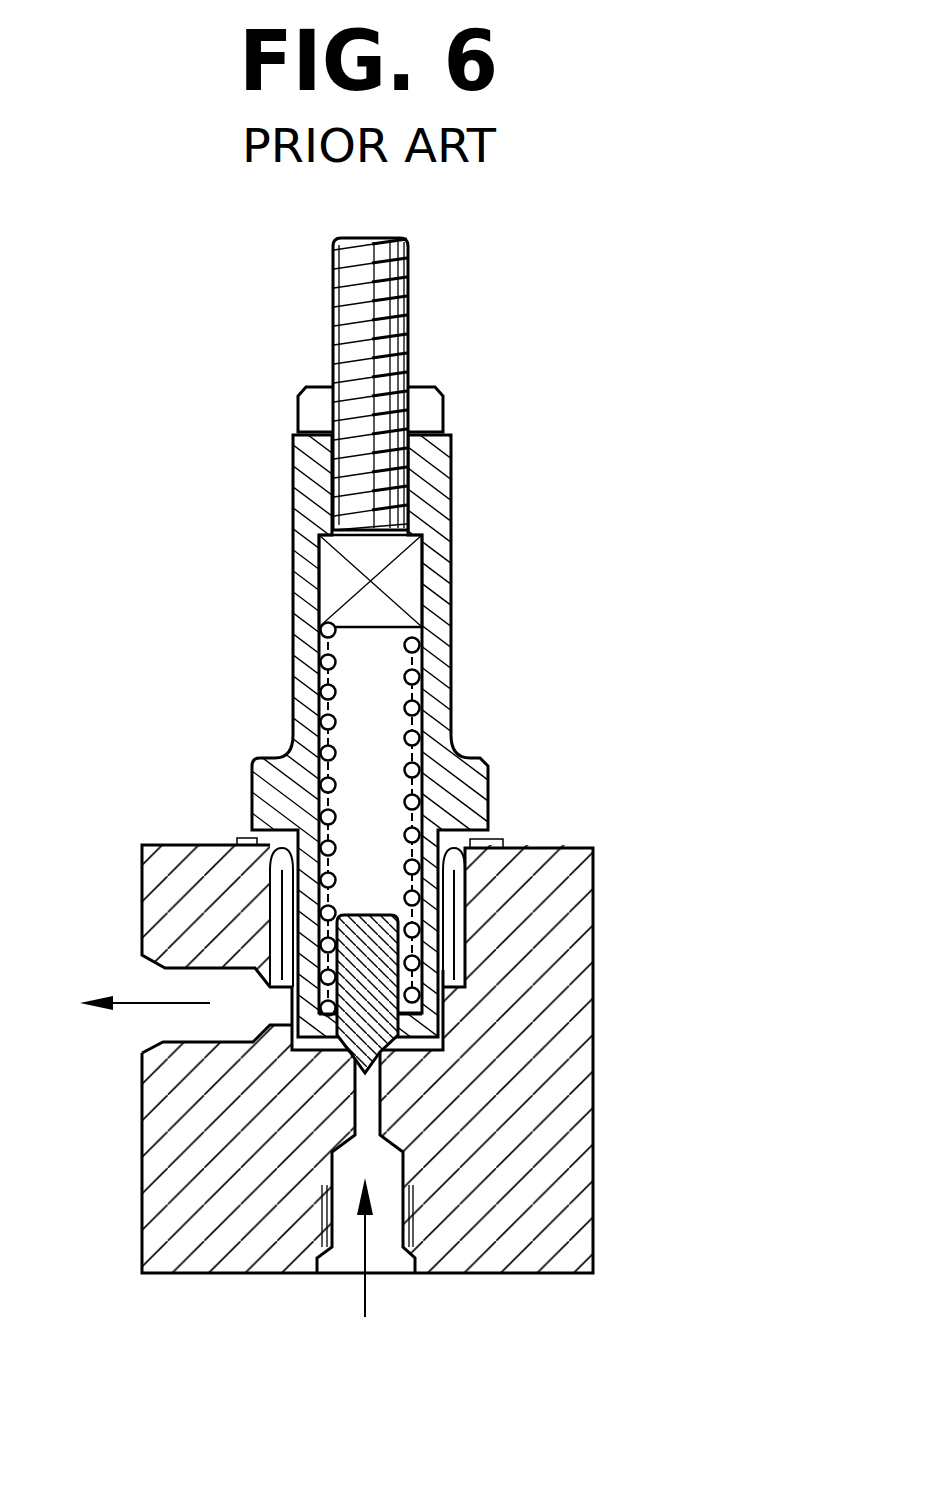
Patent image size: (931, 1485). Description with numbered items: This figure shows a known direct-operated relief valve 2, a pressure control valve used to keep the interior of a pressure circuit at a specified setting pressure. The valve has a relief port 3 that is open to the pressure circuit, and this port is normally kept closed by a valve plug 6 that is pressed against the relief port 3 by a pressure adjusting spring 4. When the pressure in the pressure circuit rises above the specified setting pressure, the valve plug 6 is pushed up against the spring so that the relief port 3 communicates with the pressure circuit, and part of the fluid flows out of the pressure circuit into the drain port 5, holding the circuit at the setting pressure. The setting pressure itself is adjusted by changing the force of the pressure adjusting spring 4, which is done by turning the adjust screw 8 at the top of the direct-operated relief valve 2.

The direct-operated relief valve 2 is at (476, 560).
The relief port 3 is at (366, 1110).
The pressure adjusting spring 4 is at (427, 718).
The drain port 5 is at (278, 980).
The valve plug 6 is at (372, 957).
The adjust screw 8 is at (347, 468).